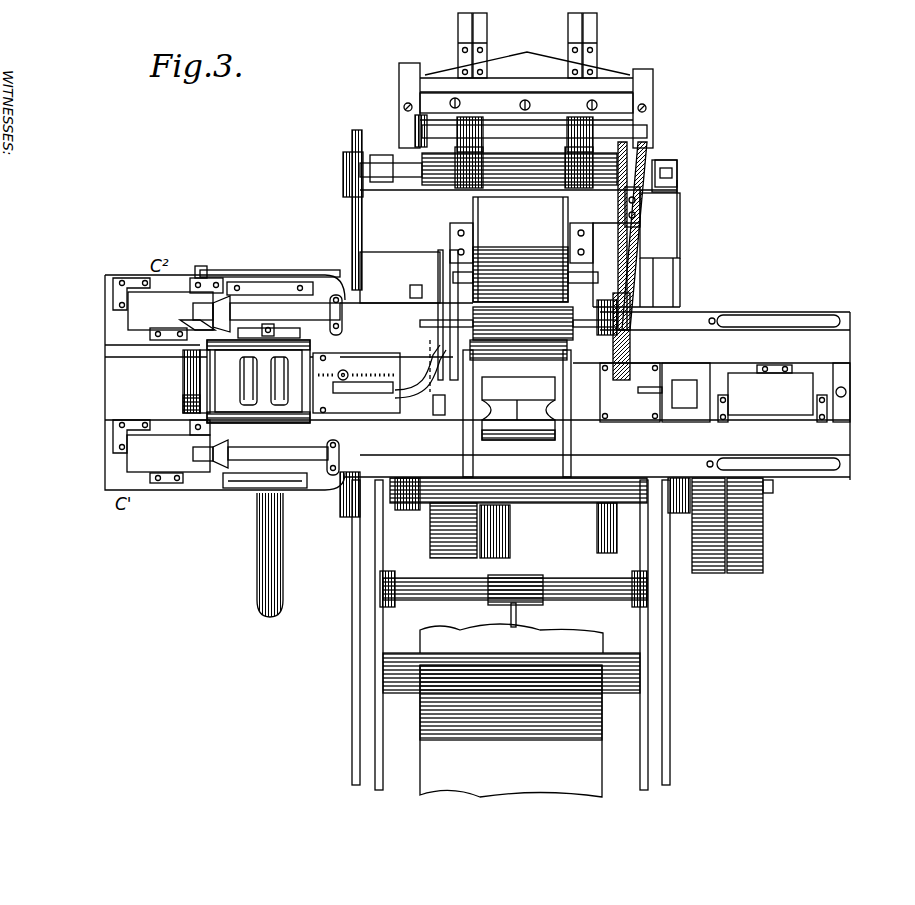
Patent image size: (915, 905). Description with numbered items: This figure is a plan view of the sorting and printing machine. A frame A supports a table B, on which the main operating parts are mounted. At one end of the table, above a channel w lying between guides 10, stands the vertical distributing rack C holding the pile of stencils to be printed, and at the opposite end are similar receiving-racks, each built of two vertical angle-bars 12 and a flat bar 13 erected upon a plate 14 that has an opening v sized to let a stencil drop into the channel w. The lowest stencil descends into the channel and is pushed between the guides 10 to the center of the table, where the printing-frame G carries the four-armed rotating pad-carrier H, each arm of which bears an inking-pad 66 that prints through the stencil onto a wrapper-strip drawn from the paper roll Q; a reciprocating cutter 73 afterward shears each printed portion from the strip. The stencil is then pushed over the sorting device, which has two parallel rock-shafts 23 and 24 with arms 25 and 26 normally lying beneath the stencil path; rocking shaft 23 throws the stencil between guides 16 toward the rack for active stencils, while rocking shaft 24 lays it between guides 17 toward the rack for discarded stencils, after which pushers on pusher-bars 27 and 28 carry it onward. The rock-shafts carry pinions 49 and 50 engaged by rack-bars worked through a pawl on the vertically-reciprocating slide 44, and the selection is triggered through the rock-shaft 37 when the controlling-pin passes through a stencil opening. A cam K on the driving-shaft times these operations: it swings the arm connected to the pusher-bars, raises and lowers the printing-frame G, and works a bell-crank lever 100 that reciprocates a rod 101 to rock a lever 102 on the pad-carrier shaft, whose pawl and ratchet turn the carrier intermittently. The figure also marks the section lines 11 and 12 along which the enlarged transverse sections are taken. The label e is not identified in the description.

The reciprocating cutter 73 is at (526, 103).
The vertical angle-bars 12 is at (210, 268).
The plate 14 is at (107, 326).
The flat bar 13 is at (170, 340).
The section line 11 11 is at (343, 262).
The rock-shaft 37 is at (295, 265).
The guides 17 is at (290, 295).
The rock-shaft 24 is at (298, 330).
The pinion 49 is at (200, 328).
The rock-shaft 23 is at (295, 425).
The arms 25 is at (247, 381).
The arms 26 is at (280, 381).
The vertically-reciprocating slide 44 is at (190, 383).
The pinion 50 is at (183, 408).
The pusher-bar 28 is at (400, 322).
The bell-crank lever 100 is at (412, 286).
The rod 101 is at (428, 402).
The lever 102 is at (443, 416).
The pusher-bar 27 is at (393, 425).
The guides 16 is at (272, 475).
The inking-pad 66 is at (518, 388).
The guides 10 is at (690, 357).
The four-armed rotating pad-carrier H is at (517, 413).
The printing-frame G is at (575, 445).
The channel w is at (655, 394).
The opening v is at (470, 382).
The table B is at (712, 294).
The distributing holder or rack C is at (812, 349).
The frame A is at (662, 650).
The cam K is at (523, 530).
The plate e is at (511, 638).
The roll Q is at (511, 731).